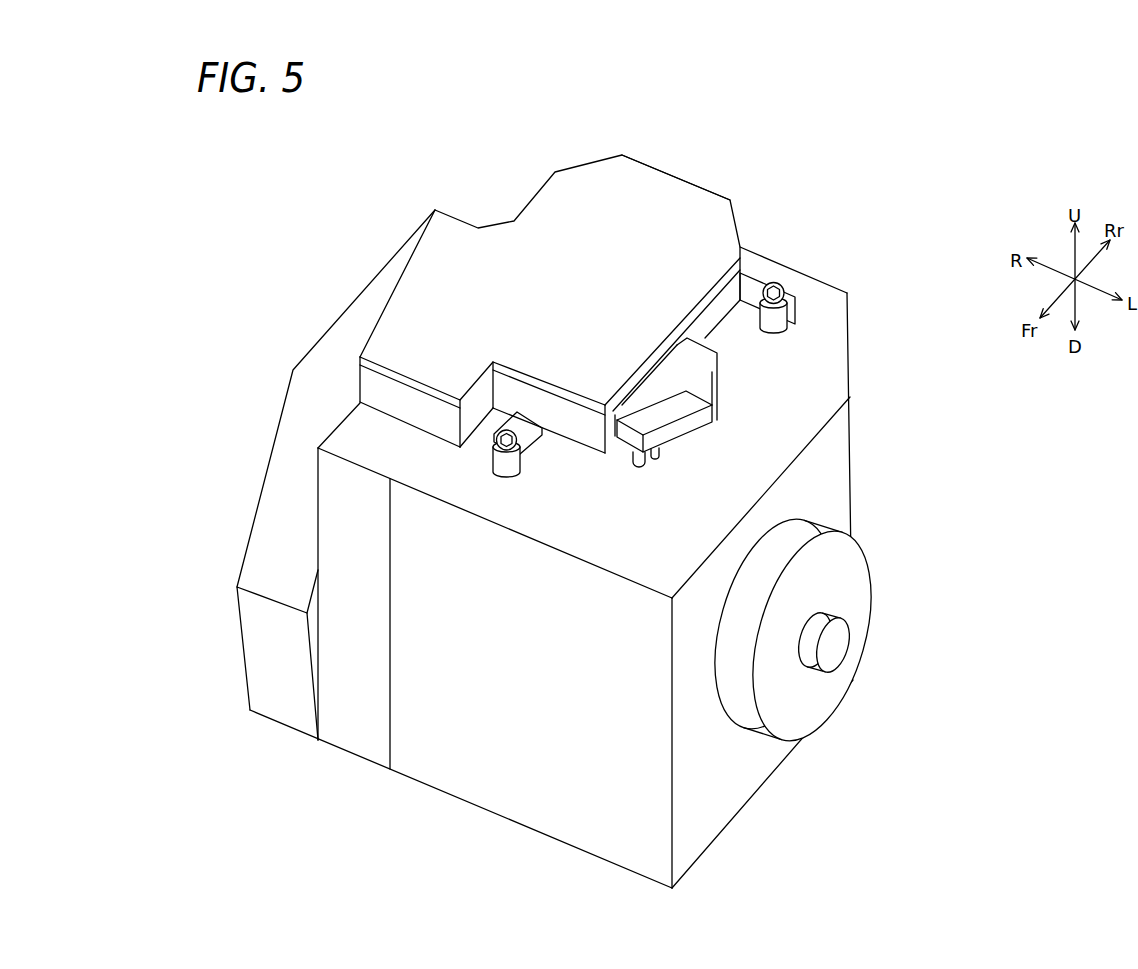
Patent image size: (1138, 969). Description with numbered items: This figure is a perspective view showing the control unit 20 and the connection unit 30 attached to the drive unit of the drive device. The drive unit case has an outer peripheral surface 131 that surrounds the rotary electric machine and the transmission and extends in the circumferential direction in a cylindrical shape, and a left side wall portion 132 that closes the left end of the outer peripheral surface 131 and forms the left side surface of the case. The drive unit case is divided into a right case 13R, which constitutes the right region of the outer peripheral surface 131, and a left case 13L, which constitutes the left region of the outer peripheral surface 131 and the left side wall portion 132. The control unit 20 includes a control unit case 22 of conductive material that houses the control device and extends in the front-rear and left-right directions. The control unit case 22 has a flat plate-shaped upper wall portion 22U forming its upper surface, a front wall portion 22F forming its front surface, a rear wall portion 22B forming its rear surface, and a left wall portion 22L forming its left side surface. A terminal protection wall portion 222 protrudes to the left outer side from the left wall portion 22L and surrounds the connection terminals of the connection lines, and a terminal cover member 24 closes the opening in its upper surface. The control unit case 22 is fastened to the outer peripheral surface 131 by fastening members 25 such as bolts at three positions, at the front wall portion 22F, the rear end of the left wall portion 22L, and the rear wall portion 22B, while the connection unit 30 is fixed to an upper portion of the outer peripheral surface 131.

The control unit 20 is at (585, 323).
The control unit case 22 is at (585, 304).
The upper wall portion 22U is at (497, 263).
The front wall portion 22F is at (508, 390).
The rear wall portion 22B is at (732, 203).
The left wall portion 22L is at (717, 315).
The terminal protection wall portion 222 is at (693, 430).
The terminal cover member 24 is at (683, 375).
The fastening member 25 is at (778, 285).
The connection unit 30 is at (677, 447).
The left side wall portion 132 is at (857, 590).
The right case 13R is at (380, 683).
The outer peripheral surface 131 is at (613, 480).
The left case 13L is at (722, 793).